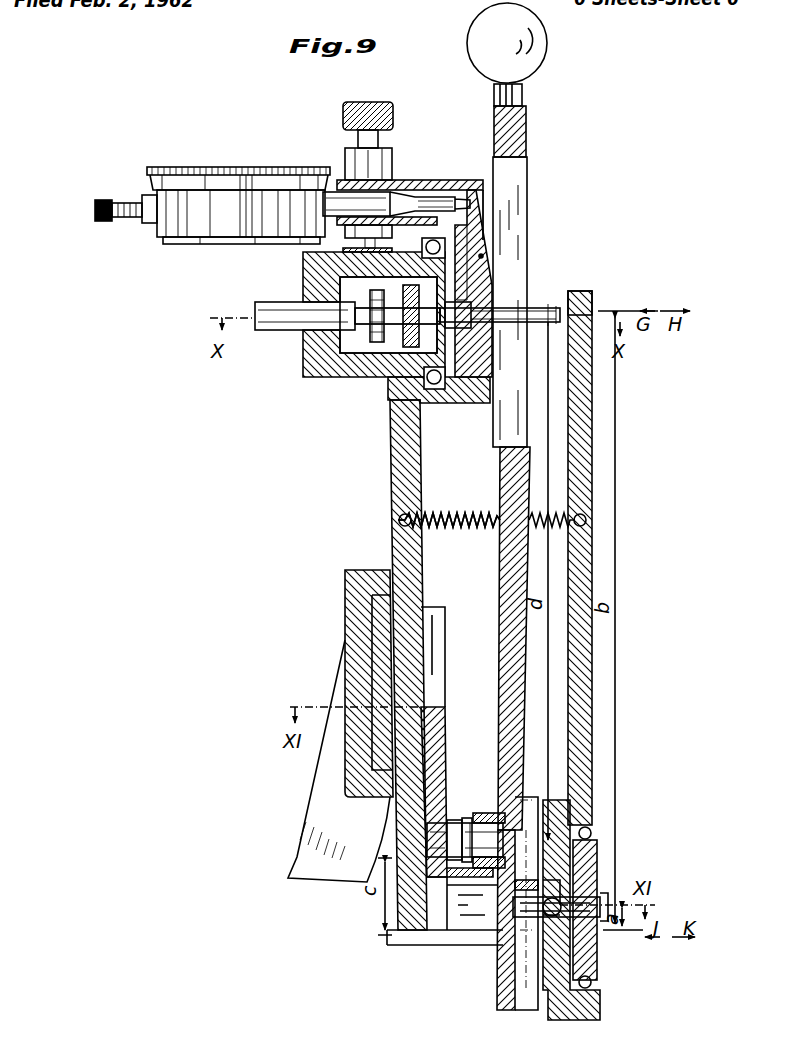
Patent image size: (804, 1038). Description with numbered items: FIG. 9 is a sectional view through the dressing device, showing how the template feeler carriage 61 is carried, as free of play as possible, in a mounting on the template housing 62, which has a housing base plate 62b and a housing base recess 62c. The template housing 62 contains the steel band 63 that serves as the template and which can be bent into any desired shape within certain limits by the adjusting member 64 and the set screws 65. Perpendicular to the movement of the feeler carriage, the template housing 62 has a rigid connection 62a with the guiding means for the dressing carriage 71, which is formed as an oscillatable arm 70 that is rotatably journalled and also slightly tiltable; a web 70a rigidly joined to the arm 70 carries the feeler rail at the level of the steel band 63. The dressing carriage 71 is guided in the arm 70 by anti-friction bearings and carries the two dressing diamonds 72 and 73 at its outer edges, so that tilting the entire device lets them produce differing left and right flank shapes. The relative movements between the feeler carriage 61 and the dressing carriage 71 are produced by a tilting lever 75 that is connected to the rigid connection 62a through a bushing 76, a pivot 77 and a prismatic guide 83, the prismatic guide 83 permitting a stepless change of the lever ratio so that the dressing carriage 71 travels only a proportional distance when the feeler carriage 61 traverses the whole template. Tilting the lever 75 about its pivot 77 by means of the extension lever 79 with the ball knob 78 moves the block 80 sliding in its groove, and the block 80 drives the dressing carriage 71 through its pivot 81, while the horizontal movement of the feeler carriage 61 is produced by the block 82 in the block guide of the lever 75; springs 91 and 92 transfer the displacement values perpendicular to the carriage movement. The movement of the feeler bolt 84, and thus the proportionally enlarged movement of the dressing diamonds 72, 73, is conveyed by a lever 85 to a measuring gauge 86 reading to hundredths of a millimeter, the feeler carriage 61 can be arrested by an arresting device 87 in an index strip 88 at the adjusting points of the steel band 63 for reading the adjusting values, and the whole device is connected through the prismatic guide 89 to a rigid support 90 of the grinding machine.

The template feeler carriage 61 is at (433, 400).
The template housing 62 is at (302, 277).
The rigid connection 62a is at (395, 450).
The housing base plate 62b is at (388, 932).
The housing base recess 62c is at (395, 931).
The steel band 63 is at (407, 337).
The adjusting member 64 is at (365, 342).
The set screws 65 is at (255, 317).
The oscillatable arm 70 is at (593, 998).
The web 70a is at (590, 372).
The dressing carriage 71 is at (590, 968).
The dressing diamond 72 is at (590, 300).
The dressing diamond 73 is at (604, 942).
The tilting lever 75 is at (522, 462).
The bushing 76 is at (461, 820).
The pivot 77 is at (427, 843).
The ball knob 78 is at (526, 44).
The extension lever 79 is at (524, 98).
The block 80 is at (515, 937).
The pivot 81 is at (548, 928).
The block 82 is at (530, 272).
The prismatic guide 83 is at (433, 732).
The feeler bolt 84 is at (542, 312).
The lever 85 is at (481, 262).
The measuring gauge 86 is at (233, 188).
The arresting device 87 is at (347, 162).
The index strip 88 is at (347, 250).
The prismatic guide 89 is at (380, 632).
The rigid support 90 is at (347, 572).
The spring 91 is at (440, 515).
The spring 92 is at (449, 506).